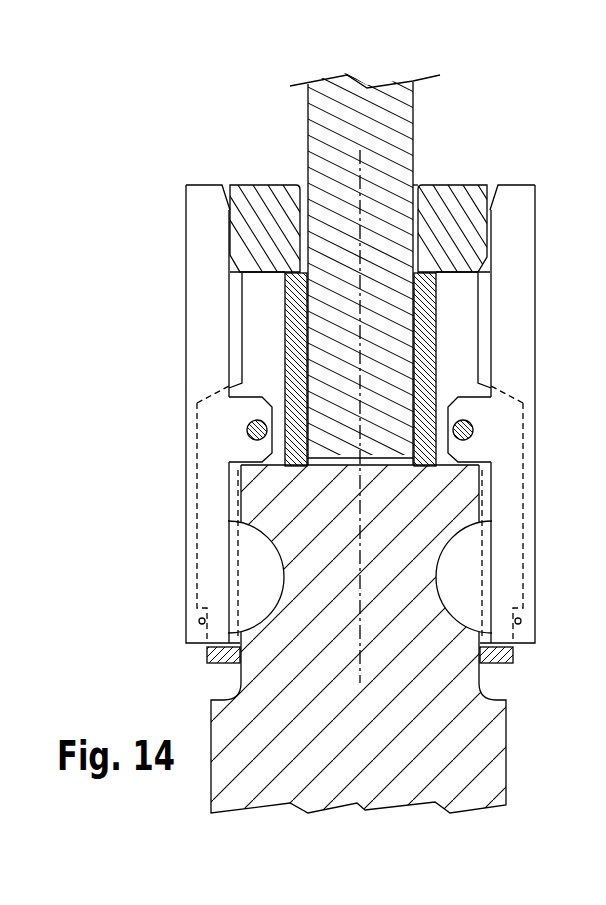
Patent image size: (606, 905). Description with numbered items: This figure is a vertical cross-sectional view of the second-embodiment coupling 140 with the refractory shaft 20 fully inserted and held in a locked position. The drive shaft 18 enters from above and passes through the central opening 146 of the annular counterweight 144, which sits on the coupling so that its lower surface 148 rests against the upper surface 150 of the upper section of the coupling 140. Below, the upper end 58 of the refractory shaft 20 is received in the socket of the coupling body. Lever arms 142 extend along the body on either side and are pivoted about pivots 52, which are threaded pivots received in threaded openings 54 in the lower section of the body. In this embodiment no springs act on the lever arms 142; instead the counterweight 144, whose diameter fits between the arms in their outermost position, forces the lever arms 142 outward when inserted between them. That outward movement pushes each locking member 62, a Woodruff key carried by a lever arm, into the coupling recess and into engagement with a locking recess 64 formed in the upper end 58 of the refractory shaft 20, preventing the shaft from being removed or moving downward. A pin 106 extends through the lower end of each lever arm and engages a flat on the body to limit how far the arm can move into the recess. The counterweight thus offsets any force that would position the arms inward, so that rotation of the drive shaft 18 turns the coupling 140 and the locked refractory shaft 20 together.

The drive shaft 18 is at (388, 120).
The refractory shaft 20 is at (443, 702).
The pivots 52 is at (243, 435).
The threaded openings 54 is at (243, 430).
The upper end of the refractory shaft 58 is at (418, 645).
The locking member 62 is at (264, 576).
The locking recess 64 is at (268, 614).
The pin 106 is at (198, 623).
The coupling 140 is at (457, 337).
The lever arms 142 is at (207, 268).
The annular counterweight 144 is at (450, 213).
The central opening 146 is at (420, 192).
The lower surface of the counterweight 148 is at (277, 276).
The upper surface of the upper section 150 is at (262, 262).